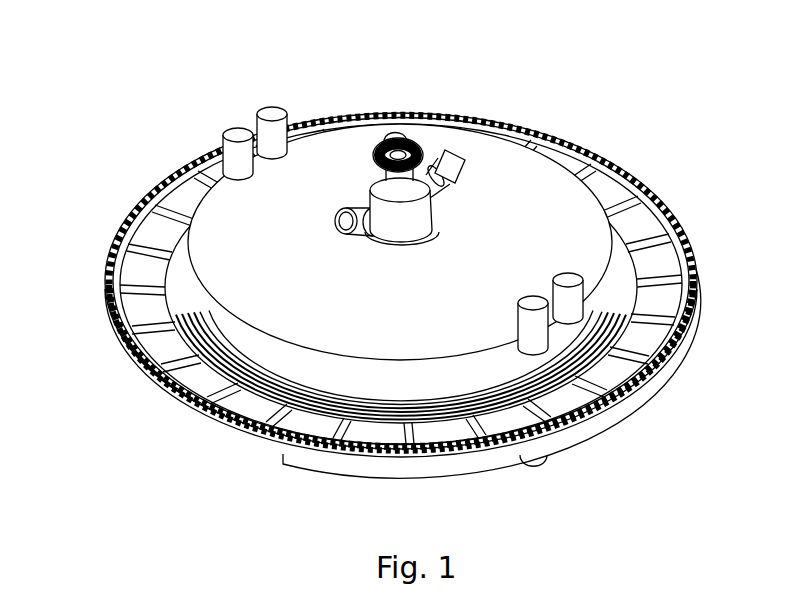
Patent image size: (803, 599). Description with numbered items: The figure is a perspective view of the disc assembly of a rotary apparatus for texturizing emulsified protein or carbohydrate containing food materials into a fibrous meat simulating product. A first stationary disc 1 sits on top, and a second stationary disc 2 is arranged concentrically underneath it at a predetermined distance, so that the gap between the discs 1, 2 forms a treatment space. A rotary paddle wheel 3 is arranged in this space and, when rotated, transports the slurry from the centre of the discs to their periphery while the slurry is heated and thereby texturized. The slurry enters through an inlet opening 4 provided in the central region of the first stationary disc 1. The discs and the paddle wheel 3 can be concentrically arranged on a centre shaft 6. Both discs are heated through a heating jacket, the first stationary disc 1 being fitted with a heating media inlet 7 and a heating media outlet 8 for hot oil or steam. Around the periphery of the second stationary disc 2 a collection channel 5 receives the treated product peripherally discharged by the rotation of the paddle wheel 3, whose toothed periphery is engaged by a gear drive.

The first stationary disc 1 is at (553, 210).
The second stationary disc 2 is at (212, 410).
The rotary paddle wheel 3 is at (110, 327).
The inlet opening 4 is at (340, 217).
The collection channel 5 is at (688, 252).
The centre shaft 6 is at (400, 132).
The heating media inlet 7 is at (222, 138).
The heating media outlet 8 is at (258, 118).